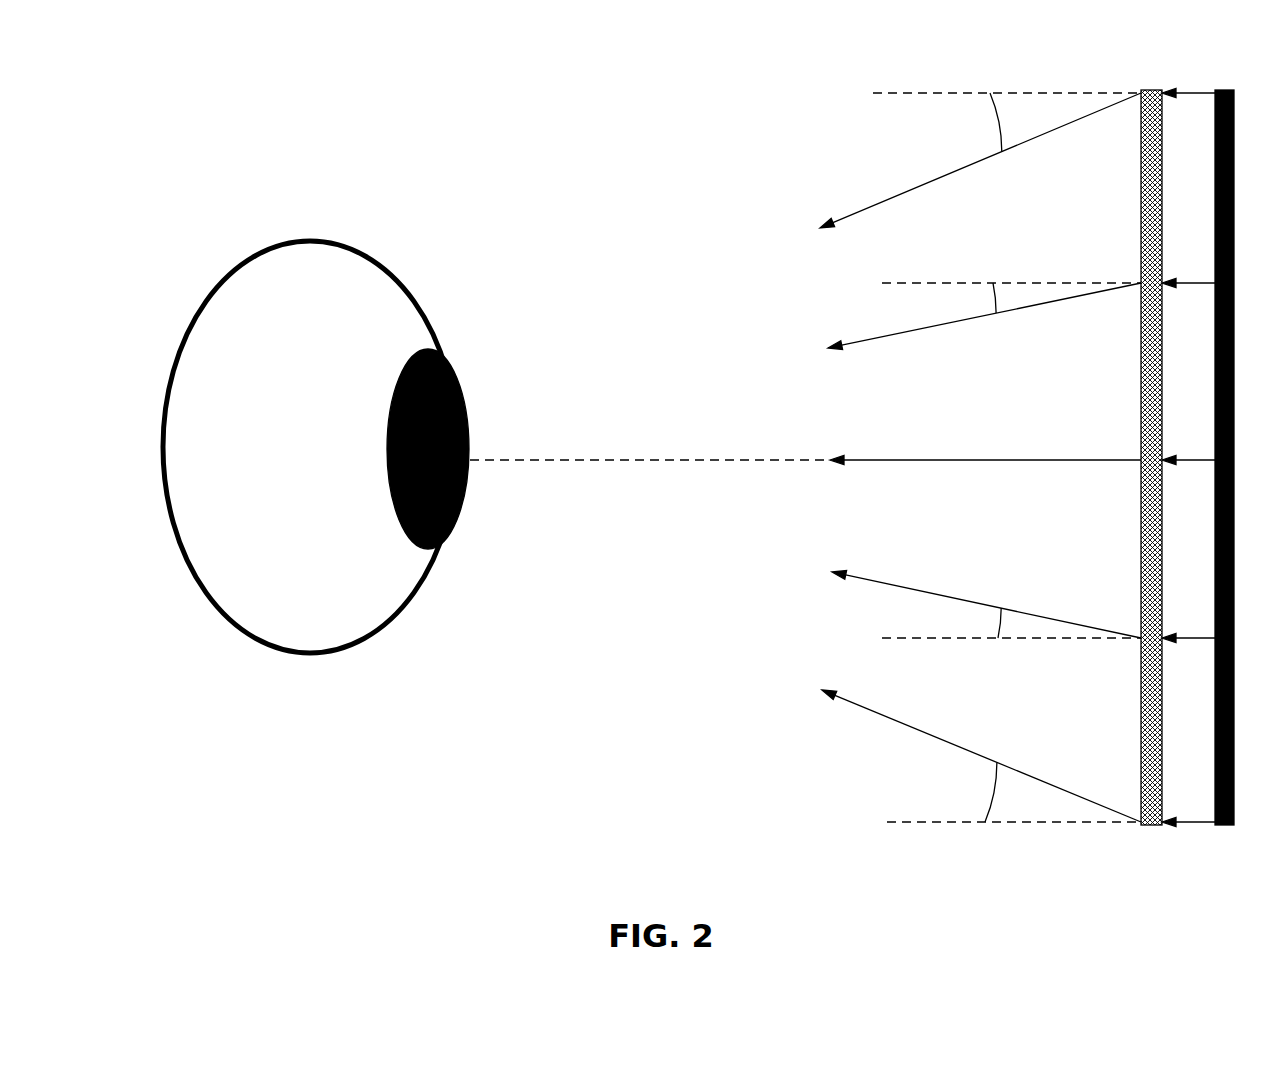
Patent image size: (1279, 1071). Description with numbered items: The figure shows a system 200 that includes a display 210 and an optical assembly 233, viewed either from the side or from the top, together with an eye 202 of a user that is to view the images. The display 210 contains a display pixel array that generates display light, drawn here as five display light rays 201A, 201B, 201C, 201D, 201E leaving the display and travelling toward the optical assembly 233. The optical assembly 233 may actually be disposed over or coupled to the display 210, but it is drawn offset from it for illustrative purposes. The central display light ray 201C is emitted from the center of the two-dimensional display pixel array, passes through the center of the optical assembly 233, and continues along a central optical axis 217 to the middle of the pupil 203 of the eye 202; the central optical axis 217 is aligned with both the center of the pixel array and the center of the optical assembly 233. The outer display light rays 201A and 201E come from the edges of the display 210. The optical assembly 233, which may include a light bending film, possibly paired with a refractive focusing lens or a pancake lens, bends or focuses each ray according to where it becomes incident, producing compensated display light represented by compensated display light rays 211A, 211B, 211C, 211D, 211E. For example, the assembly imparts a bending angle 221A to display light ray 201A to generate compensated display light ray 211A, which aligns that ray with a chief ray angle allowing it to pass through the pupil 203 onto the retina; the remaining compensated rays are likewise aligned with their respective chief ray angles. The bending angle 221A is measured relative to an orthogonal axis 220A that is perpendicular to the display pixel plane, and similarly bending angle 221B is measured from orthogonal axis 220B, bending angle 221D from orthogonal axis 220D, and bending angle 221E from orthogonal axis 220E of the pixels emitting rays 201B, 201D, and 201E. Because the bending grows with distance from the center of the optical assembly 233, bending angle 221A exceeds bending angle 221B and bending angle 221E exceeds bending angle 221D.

The system 200 is at (580, 52).
The eye 202 is at (214, 215).
The pupil 203 is at (480, 390).
The display 210 is at (1228, 90).
The optical assembly 233 is at (1152, 90).
The central optical axis 217 is at (660, 460).
The display light ray 201A is at (1188, 110).
The display light ray 201B is at (1188, 301).
The display light ray 201C is at (1188, 447).
The display light ray 201D is at (1188, 625).
The display light ray 201E is at (1188, 809).
The compensated display light ray 211A is at (980, 160).
The compensated display light ray 211B is at (984, 328).
The compensated display light ray 211C is at (985, 447).
The compensated display light ray 211D is at (986, 593).
The compensated display light ray 211E is at (981, 756).
The orthogonal axis 220A is at (876, 93).
The orthogonal axis 220B is at (896, 283).
The orthogonal axis 220D is at (897, 638).
The orthogonal axis 220E is at (912, 822).
The bending angle 221A is at (985, 117).
The bending angle 221B is at (990, 294).
The bending angle 221D is at (995, 627).
The bending angle 221E is at (985, 797).